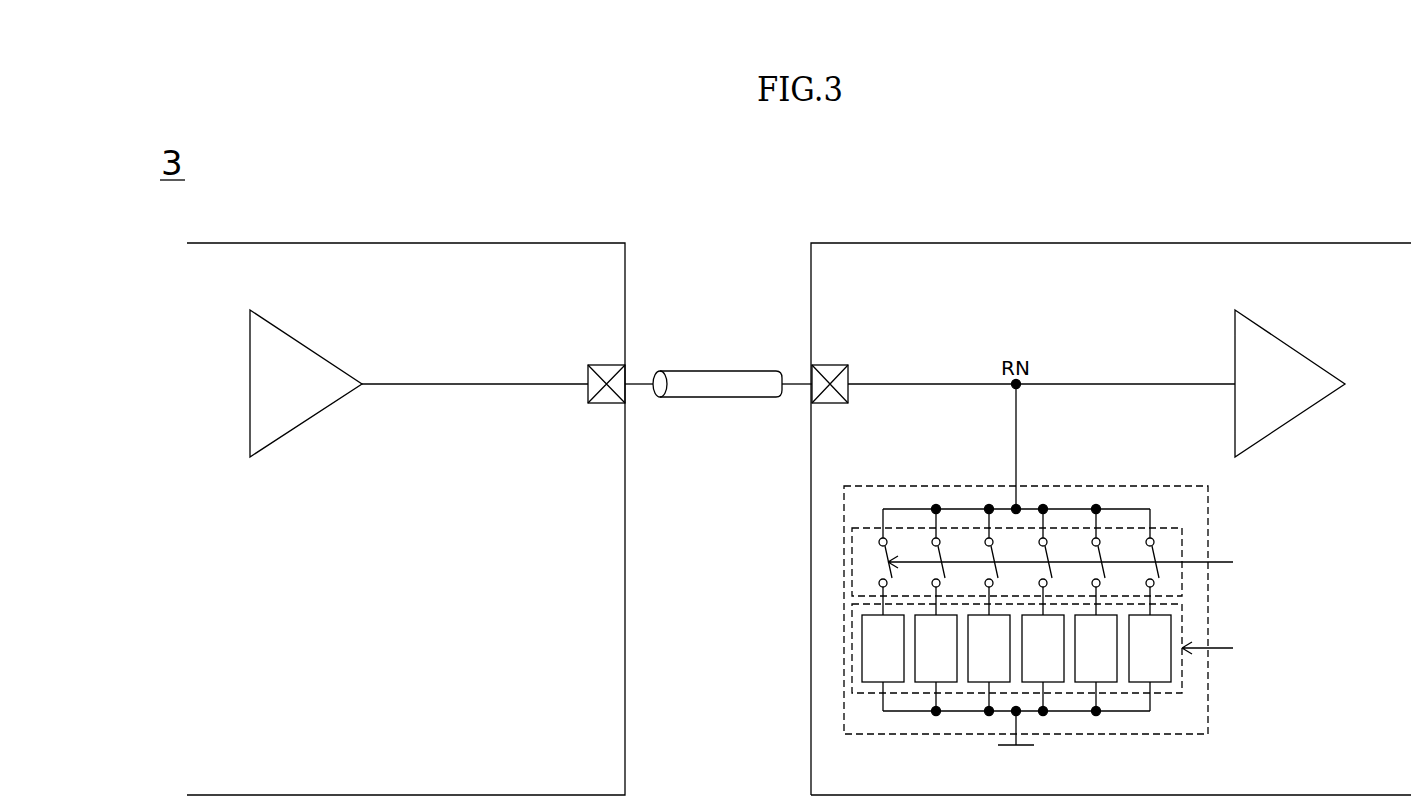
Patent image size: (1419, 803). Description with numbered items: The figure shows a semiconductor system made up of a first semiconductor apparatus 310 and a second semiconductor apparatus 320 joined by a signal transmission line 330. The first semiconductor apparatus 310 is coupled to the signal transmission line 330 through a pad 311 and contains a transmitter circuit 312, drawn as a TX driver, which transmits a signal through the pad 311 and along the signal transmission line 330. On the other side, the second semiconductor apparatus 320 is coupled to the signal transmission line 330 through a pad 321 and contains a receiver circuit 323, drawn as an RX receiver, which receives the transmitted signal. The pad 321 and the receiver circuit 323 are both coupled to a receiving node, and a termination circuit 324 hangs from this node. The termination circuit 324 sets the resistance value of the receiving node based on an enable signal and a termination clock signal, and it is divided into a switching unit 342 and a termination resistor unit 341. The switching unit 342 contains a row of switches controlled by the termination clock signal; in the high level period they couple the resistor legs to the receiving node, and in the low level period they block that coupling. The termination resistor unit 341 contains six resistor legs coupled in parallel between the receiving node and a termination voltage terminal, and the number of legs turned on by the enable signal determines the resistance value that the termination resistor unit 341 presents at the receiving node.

The first semiconductor apparatus 310 is at (596, 230).
The pad 311 is at (598, 365).
The transmitter circuit 312 is at (326, 335).
The second semiconductor apparatus 320 is at (1343, 243).
The pad 321 is at (835, 365).
The receiver circuit 323 is at (1308, 336).
The termination circuit 324 is at (1136, 476).
The signal transmission line 330 is at (722, 371).
The termination resistor unit 341 is at (1160, 694).
The switching unit 342 is at (1160, 528).